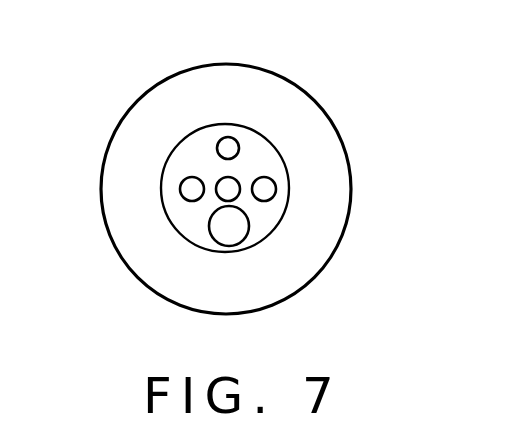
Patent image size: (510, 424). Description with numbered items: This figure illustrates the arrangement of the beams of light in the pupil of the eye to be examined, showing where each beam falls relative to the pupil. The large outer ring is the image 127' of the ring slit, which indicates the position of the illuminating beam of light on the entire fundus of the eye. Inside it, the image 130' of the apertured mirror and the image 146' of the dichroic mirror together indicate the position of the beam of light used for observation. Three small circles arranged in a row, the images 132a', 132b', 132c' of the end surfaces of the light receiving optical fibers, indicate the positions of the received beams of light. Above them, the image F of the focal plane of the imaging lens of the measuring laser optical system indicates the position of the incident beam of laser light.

The image of the ring slit 127' is at (203, 189).
The image of the apertured mirror 130' is at (288, 169).
The image of the focal plane of the imaging lens F is at (229, 148).
The image of the end surface of a light receiving optical fiber 132a' is at (110, 193).
The image of the end surface of a light receiving optical fiber 132b' is at (148, 247).
The image of the end surface of a light receiving optical fiber 132c' is at (353, 195).
The image of the dichroic mirror 146' is at (295, 273).